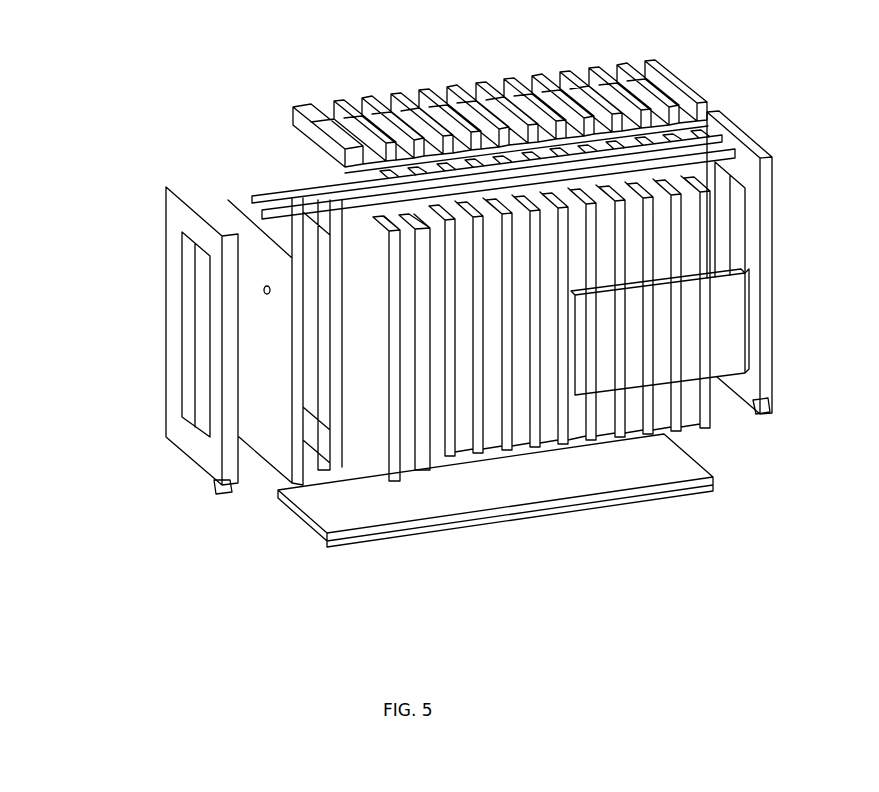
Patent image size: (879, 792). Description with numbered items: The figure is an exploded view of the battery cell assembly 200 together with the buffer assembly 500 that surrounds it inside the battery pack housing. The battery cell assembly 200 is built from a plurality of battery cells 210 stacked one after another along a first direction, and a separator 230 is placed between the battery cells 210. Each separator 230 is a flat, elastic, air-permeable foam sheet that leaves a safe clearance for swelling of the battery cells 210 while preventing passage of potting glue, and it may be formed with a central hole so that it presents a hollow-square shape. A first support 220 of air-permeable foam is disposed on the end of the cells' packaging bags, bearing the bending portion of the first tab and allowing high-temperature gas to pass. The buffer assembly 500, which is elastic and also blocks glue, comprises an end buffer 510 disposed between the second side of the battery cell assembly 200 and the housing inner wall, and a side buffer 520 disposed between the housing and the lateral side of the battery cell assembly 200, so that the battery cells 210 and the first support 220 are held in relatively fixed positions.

The battery cell assembly 200 is at (148, 74).
The battery cell 210 is at (263, 387).
The first support 220 is at (370, 118).
The separator 230 is at (335, 343).
The buffer assembly 500 is at (503, 454).
The end buffer 510 is at (387, 498).
The side buffer 520 is at (213, 492).